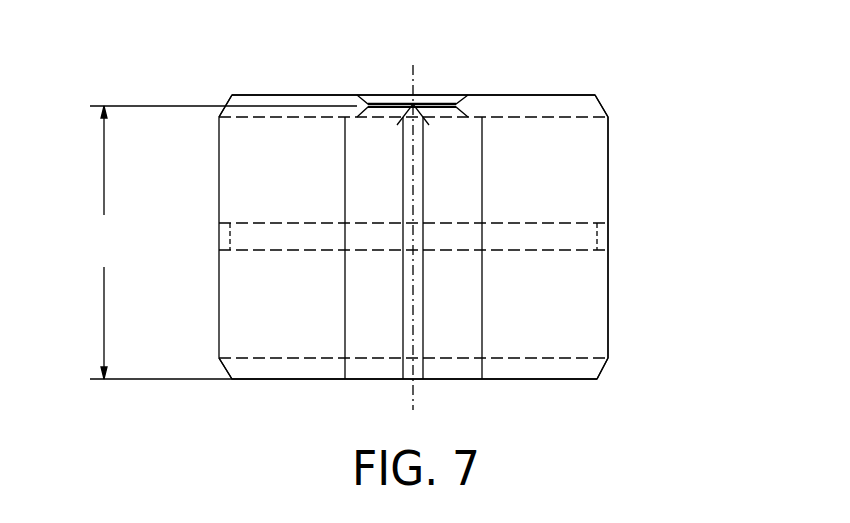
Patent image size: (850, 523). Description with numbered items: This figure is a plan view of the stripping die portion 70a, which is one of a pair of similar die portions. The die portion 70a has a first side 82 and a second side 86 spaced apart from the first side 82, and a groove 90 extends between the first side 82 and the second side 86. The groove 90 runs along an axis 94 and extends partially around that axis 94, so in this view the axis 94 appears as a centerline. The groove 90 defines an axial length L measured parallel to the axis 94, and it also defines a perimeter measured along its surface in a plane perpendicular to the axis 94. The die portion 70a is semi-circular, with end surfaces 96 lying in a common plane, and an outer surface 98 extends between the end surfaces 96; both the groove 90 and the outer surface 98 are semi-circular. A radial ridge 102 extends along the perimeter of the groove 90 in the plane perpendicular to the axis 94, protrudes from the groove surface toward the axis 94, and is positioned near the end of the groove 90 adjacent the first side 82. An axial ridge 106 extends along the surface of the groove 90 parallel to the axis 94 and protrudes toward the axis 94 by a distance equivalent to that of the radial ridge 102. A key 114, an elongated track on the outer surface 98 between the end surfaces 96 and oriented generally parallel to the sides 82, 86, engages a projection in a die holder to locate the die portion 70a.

The die portion 70a is at (747, 190).
The first side 82 is at (535, 95).
The second side 86 is at (570, 380).
The groove 90 is at (478, 296).
The axis 94 is at (411, 88).
The end surfaces 96 is at (588, 343).
The outer surface 98 is at (608, 278).
The radial ridge 102 is at (440, 95).
The axial ridge 106 is at (403, 370).
The key 114 is at (522, 232).
The axial length L is at (223, 242).